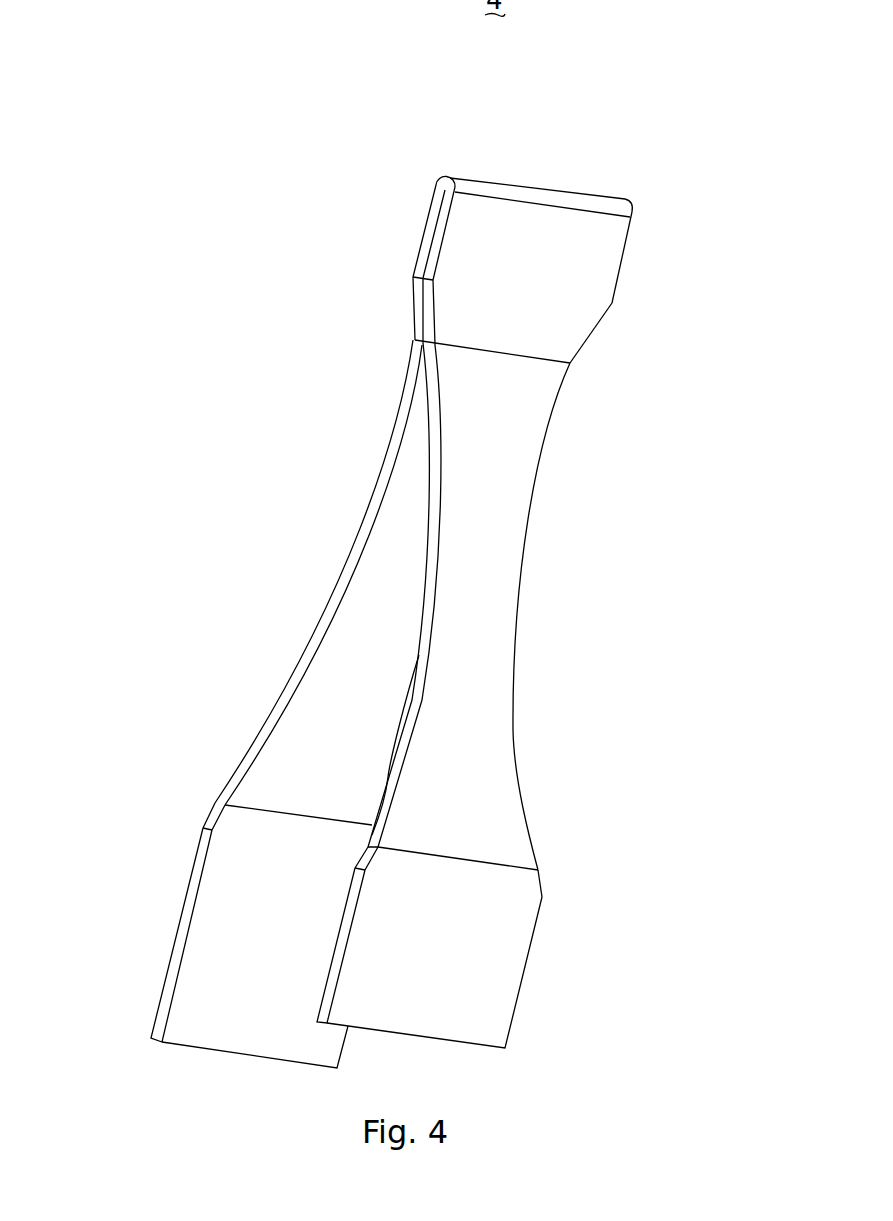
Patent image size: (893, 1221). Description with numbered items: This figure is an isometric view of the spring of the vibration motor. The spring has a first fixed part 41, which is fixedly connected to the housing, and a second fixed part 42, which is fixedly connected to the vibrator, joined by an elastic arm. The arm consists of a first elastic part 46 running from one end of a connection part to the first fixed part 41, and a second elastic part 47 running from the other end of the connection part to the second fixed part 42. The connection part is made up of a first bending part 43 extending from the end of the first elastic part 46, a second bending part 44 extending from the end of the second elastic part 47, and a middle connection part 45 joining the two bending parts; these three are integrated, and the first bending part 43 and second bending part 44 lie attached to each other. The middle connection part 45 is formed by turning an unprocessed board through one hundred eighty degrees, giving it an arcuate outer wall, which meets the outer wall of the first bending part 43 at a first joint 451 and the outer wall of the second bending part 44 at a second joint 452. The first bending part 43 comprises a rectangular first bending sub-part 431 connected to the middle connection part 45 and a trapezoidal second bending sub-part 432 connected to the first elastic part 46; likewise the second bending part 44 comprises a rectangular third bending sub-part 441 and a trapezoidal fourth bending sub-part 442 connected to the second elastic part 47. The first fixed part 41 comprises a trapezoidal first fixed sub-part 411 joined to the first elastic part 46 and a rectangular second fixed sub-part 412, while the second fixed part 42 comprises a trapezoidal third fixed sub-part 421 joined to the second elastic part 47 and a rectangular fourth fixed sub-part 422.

The first fixed part 41 is at (511, 947).
The first fixed sub-part 411 is at (525, 887).
The second fixed sub-part 412 is at (503, 963).
The second fixed part 42 is at (202, 920).
The third fixed sub-part 421 is at (213, 815).
The fourth fixed sub-part 422 is at (234, 936).
The first bending part 43 is at (680, 287).
The first bending sub-part 431 is at (608, 260).
The second bending sub-part 432 is at (578, 330).
The second bending part 44 is at (354, 265).
The third bending sub-part 441 is at (427, 240).
The fourth bending sub-part 442 is at (417, 305).
The middle connection part 45 is at (513, 192).
The first joint 451 is at (627, 200).
The second joint 452 is at (437, 183).
The first elastic part 46 is at (498, 607).
The second elastic part 47 is at (365, 600).